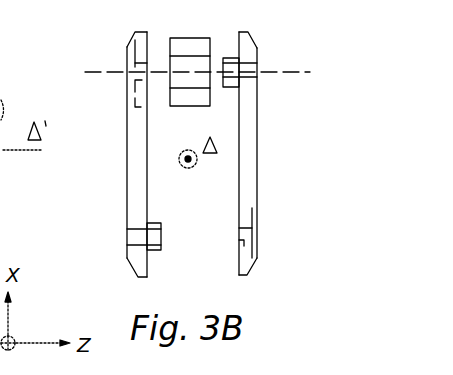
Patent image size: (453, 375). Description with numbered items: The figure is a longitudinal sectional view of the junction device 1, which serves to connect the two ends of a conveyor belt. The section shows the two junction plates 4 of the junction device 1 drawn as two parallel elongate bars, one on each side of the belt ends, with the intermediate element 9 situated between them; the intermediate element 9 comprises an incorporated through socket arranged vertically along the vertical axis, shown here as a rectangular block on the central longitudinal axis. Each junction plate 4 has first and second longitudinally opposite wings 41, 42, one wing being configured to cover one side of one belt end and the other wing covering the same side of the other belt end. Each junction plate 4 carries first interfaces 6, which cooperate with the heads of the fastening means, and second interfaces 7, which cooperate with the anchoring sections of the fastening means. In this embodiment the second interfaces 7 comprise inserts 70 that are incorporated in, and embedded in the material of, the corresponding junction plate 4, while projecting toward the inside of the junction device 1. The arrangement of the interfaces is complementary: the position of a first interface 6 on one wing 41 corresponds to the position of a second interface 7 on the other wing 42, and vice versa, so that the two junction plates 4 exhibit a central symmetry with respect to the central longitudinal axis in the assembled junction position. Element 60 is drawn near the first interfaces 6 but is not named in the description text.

The junction device 1 is at (92, 56).
The junction plate 4 is at (262, 284).
The first wing 41 is at (134, 32).
The second wing 42 is at (270, 35).
The first interface 6 is at (130, 100).
The pin 60 is at (130, 68).
The second interface 7 is at (258, 78).
The insert 70 is at (258, 65).
The intermediate element 9 is at (192, 42).